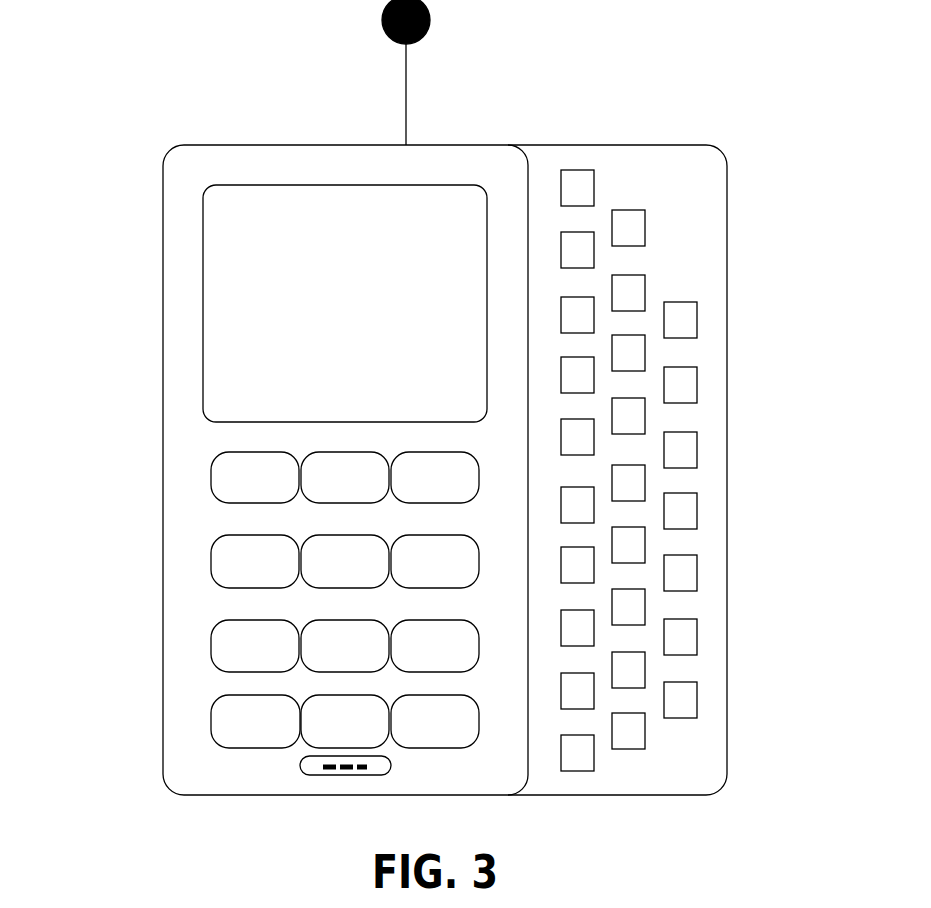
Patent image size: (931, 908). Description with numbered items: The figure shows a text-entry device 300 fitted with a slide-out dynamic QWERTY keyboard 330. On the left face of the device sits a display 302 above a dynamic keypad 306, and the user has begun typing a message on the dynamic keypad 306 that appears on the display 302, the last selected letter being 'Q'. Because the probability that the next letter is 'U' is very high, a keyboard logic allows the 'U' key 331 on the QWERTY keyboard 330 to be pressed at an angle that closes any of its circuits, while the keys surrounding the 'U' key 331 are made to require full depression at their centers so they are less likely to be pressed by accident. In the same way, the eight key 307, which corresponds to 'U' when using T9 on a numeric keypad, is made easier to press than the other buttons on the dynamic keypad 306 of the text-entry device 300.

The text-entry device 300 is at (472, 145).
The display 302 is at (322, 185).
The dynamic keypad 306 is at (250, 586).
The '8' key 307 is at (310, 622).
The slide-out dynamic QWERTY keyboard 330 is at (711, 403).
The 'U' key 331 is at (588, 358).